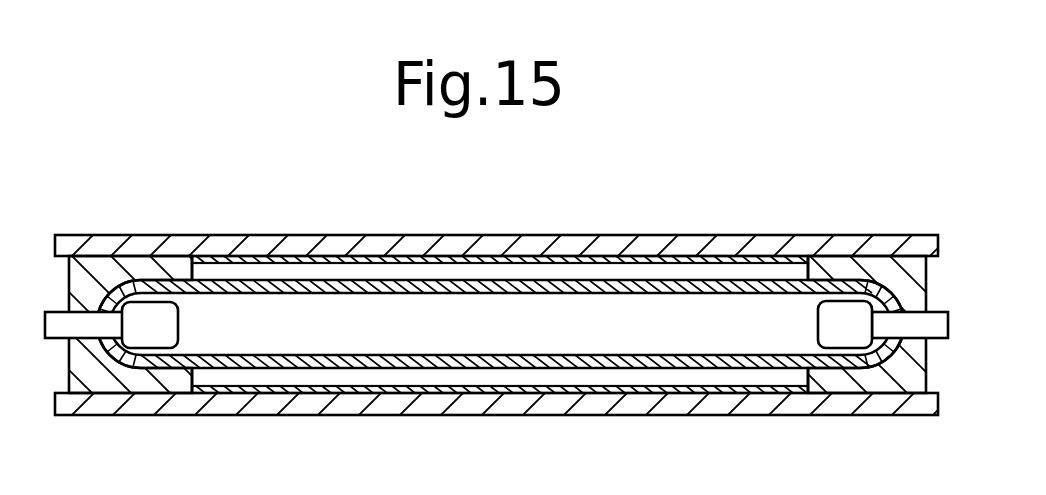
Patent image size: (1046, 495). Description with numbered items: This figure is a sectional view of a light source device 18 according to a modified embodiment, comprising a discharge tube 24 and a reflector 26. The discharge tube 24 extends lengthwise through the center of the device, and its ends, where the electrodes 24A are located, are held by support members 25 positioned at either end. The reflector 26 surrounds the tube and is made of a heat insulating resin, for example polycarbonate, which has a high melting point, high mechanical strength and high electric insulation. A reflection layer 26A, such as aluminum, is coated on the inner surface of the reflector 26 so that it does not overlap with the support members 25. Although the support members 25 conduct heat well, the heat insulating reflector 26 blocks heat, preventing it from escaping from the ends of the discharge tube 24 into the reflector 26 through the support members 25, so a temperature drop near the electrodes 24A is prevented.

The light source device 18 is at (668, 211).
The discharge tube 24 is at (405, 289).
The electrodes 24A is at (153, 328).
The support members 25 is at (100, 378).
The reflector 26 is at (530, 258).
The reflection layer 26A is at (580, 262).